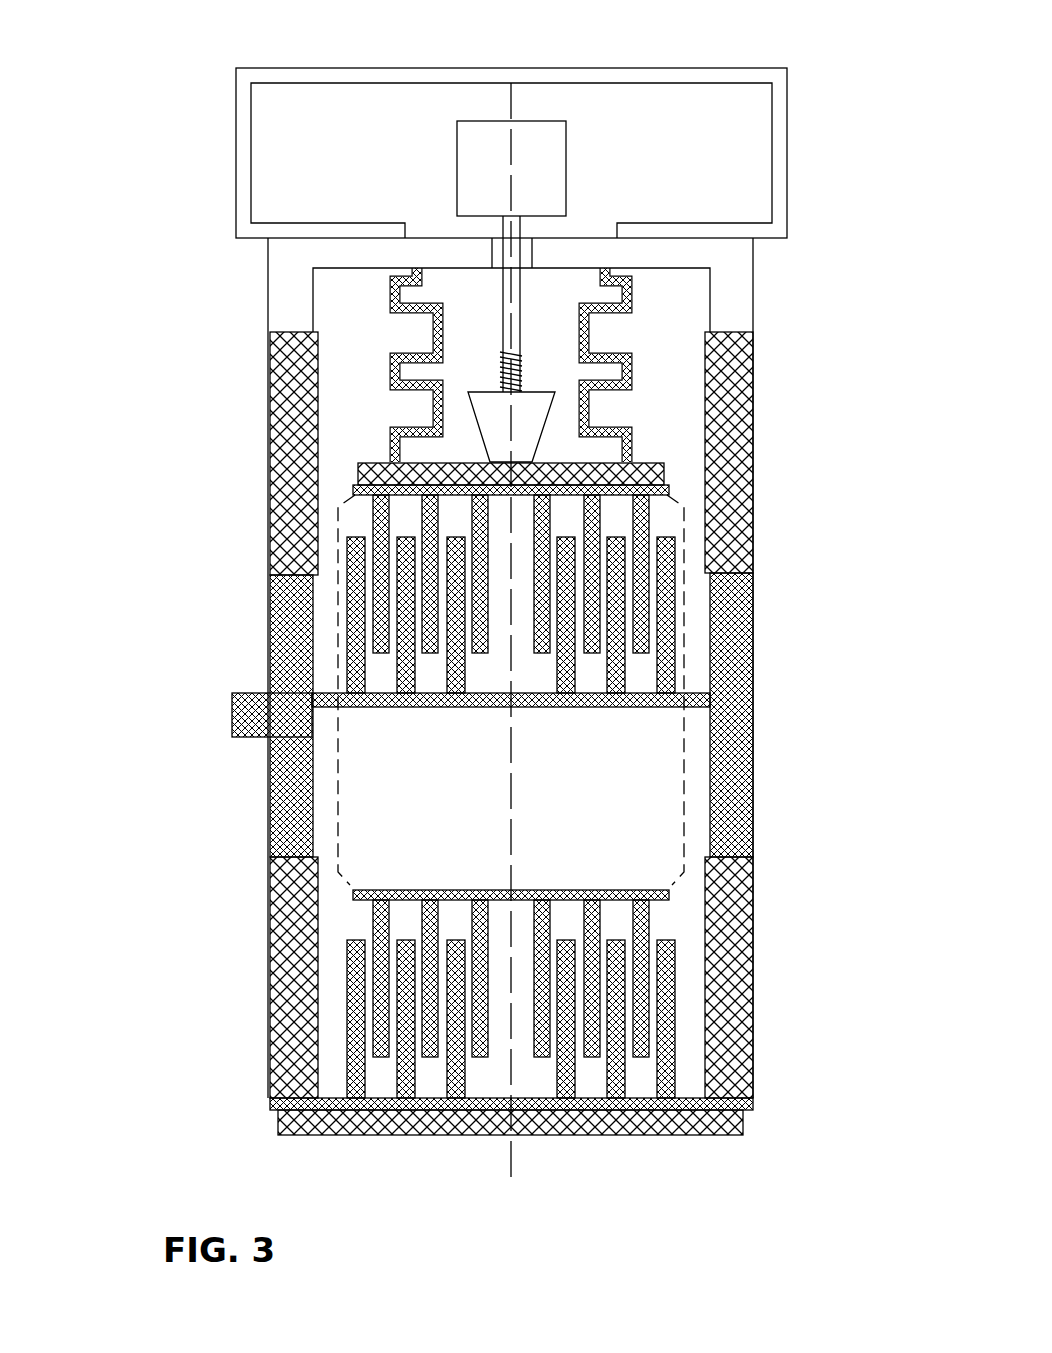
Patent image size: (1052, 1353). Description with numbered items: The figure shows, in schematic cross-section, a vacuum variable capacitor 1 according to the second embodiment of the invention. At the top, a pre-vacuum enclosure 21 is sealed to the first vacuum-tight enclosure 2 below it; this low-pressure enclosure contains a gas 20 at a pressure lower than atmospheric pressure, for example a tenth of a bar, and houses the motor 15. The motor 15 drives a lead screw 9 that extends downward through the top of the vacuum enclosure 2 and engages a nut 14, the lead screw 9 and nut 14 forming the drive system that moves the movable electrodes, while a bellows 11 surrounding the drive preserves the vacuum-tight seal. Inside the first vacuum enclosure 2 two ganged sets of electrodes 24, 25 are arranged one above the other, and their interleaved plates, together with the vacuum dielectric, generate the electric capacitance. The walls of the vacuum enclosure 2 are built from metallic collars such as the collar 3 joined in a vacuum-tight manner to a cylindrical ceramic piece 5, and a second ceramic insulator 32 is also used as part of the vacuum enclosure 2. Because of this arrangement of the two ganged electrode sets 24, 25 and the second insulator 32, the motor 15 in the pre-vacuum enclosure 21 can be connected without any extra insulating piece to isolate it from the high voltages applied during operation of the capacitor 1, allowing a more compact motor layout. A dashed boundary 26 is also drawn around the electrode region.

The vacuum variable capacitor 1 is at (127, 203).
The first vacuum-tight enclosure 2 is at (213, 510).
The metallic collar 3 is at (672, 1137).
The cylindrical ceramic piece 5 is at (740, 1040).
The lead screw 9 is at (507, 303).
The bellows 11 is at (633, 388).
The nut 14 is at (490, 425).
The motor 15 is at (537, 138).
The gas 20 is at (742, 155).
The pre-vacuum enclosure 21 is at (697, 75).
The ganged set of electrodes 24 is at (673, 923).
The ganged set of electrodes 25 is at (685, 555).
The chamber boundary 26 is at (685, 800).
The second ceramic insulator 32 is at (740, 462).